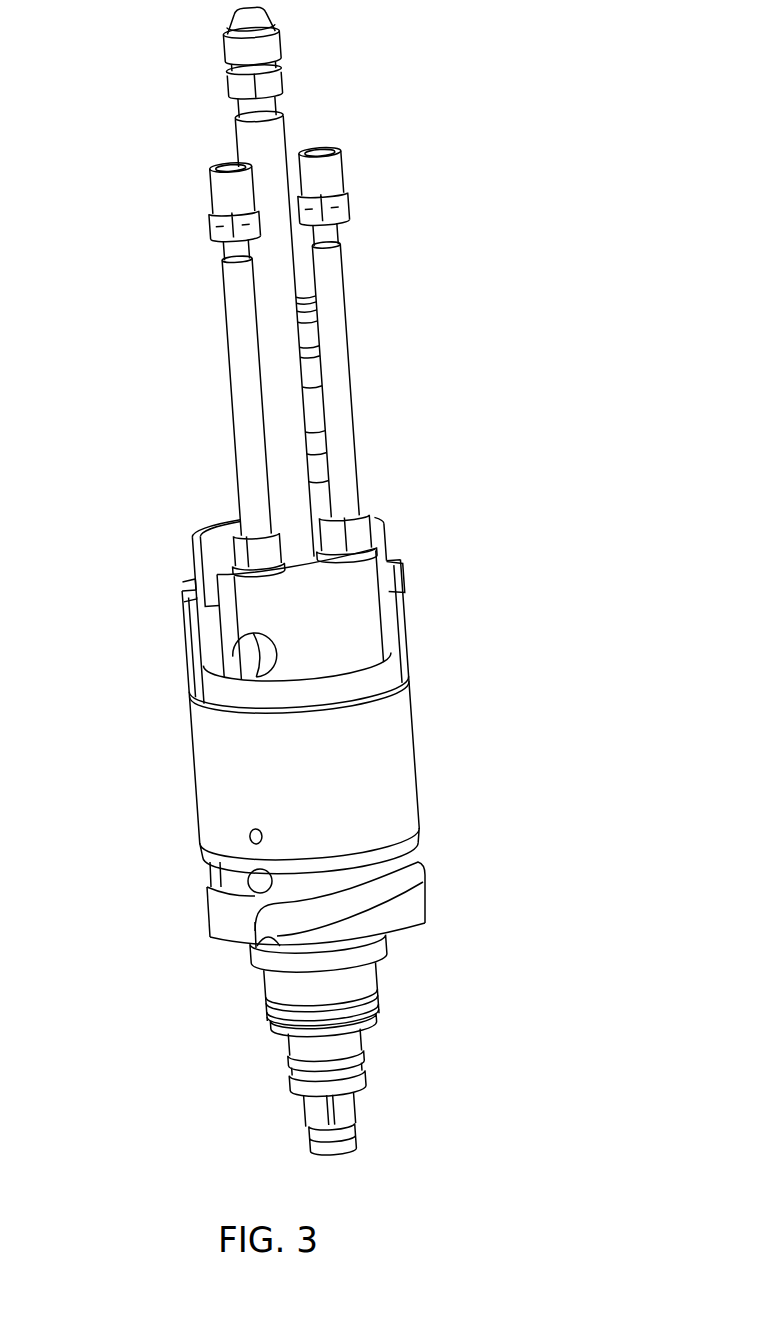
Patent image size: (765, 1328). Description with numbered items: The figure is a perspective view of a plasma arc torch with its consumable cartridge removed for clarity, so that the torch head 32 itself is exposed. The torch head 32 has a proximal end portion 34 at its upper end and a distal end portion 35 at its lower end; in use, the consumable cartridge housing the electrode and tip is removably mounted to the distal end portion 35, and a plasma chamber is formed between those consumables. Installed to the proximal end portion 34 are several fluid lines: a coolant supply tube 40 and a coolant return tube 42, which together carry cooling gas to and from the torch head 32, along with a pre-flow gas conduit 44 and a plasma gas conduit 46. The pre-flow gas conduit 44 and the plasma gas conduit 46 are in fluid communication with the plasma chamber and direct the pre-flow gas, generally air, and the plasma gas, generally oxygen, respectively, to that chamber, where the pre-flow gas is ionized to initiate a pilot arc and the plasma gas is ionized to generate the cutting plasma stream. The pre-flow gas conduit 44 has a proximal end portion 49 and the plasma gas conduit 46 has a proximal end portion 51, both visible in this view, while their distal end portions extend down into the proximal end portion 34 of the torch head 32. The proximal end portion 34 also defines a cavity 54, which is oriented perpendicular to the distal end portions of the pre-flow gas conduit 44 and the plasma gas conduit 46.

The torch head 32 is at (417, 768).
The proximal end portion 34 is at (185, 643).
The distal end portion 35 is at (203, 950).
The coolant supply tube 40 is at (283, 133).
The coolant return tube 42 is at (318, 497).
The pre-flow gas conduit 44 is at (225, 392).
The plasma gas conduit 46 is at (357, 346).
The proximal end portion of the pre-flow gas conduit 49 is at (228, 278).
The proximal end portion of the plasma gas conduit 51 is at (343, 260).
The cavity 54 is at (240, 670).